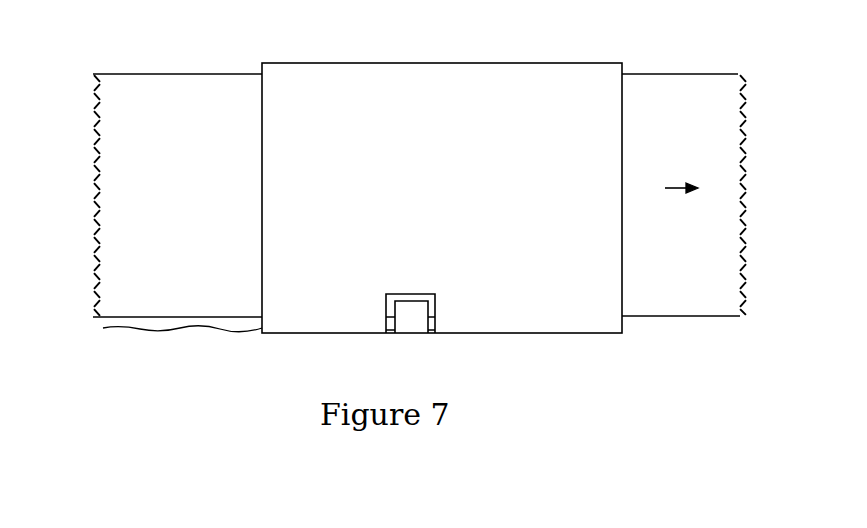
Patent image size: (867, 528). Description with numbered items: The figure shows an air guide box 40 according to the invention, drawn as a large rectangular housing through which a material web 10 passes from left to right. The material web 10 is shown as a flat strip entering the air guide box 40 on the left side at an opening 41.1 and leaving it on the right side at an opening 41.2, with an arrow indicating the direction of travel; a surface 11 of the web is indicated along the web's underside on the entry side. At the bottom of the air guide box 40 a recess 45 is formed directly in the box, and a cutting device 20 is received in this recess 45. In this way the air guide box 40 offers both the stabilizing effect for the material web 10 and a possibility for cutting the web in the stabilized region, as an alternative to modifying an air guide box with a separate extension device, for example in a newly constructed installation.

The material web 10 is at (142, 328).
The surface of substrate 11 is at (195, 320).
The cutting device 20 is at (413, 333).
The air guide box 40 is at (502, 63).
The inlet opening 41.1 is at (262, 95).
The outlet opening 41.2 is at (622, 90).
The recess 45 is at (430, 307).